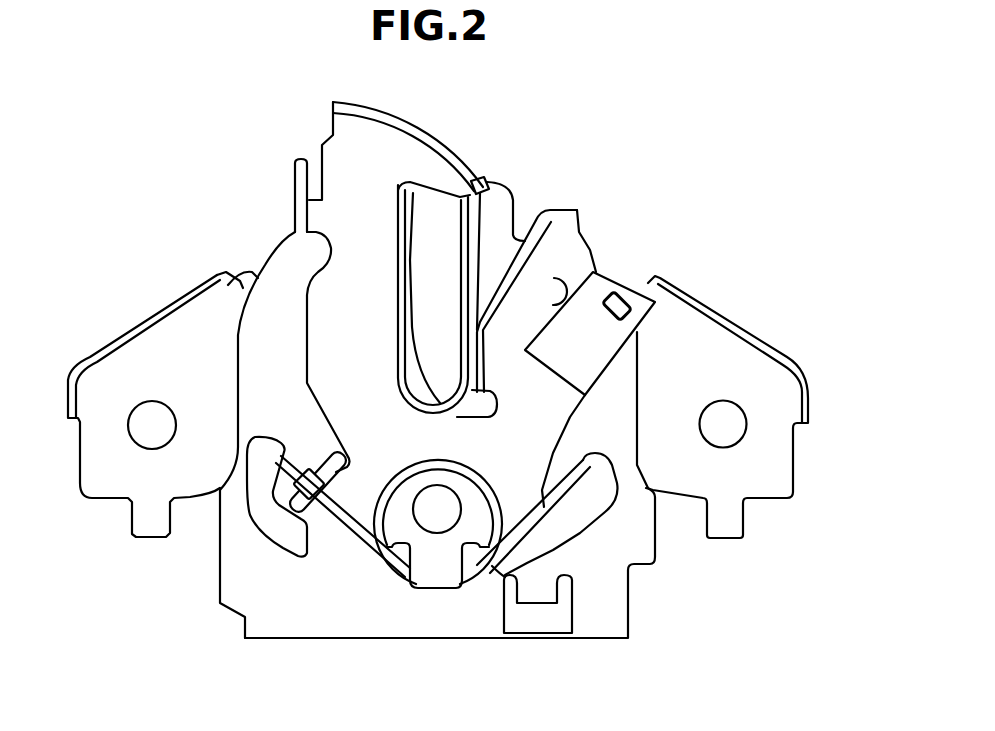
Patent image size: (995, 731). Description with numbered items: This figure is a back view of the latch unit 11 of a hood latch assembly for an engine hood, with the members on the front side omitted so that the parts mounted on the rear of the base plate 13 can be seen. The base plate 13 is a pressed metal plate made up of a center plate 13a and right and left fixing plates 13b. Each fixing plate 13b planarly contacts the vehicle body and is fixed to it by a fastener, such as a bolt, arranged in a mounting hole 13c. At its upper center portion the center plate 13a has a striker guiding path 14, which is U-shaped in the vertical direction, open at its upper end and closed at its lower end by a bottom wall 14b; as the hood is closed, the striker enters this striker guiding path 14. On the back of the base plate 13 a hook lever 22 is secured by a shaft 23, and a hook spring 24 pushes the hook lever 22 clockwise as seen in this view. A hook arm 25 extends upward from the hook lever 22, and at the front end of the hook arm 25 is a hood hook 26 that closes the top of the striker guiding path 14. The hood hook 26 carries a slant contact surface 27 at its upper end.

The latch unit 11 is at (743, 210).
The base plate 13 is at (621, 388).
The center plate 13a is at (605, 589).
The fixing plate 13b is at (132, 380).
The mounting hole 13c is at (142, 437).
The striker guiding path 14 is at (443, 271).
The bottom wall 14b is at (442, 405).
The hook lever 22 is at (330, 355).
The shaft 23 is at (432, 508).
The hook spring 24 is at (408, 552).
The hook arm 25 is at (348, 198).
The hood hook 26 is at (419, 148).
The slant contact surface 27 is at (443, 140).